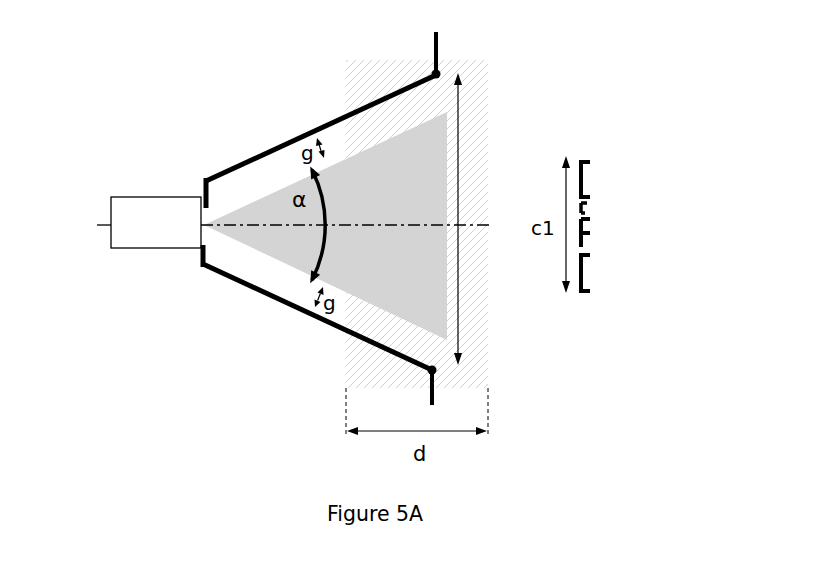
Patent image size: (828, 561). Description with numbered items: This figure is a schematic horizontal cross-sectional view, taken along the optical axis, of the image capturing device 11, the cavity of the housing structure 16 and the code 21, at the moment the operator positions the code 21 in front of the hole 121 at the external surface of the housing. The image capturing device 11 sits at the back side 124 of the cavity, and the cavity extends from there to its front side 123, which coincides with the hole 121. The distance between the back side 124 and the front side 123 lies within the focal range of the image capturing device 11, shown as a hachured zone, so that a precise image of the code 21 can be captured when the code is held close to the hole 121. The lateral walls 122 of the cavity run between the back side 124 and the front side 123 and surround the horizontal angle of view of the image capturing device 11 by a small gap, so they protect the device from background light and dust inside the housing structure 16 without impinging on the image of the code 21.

The image capturing device 11 is at (155, 196).
The housing structure 16 is at (437, 40).
The code 21 is at (591, 153).
The hole 121 is at (435, 285).
The lateral walls 122 is at (276, 146).
The front side 123 is at (507, 355).
The back side 124 is at (204, 177).